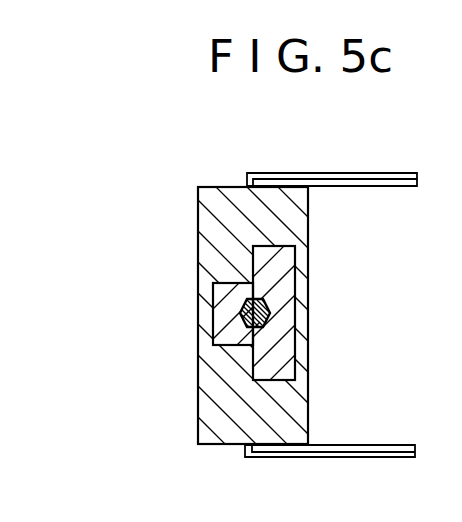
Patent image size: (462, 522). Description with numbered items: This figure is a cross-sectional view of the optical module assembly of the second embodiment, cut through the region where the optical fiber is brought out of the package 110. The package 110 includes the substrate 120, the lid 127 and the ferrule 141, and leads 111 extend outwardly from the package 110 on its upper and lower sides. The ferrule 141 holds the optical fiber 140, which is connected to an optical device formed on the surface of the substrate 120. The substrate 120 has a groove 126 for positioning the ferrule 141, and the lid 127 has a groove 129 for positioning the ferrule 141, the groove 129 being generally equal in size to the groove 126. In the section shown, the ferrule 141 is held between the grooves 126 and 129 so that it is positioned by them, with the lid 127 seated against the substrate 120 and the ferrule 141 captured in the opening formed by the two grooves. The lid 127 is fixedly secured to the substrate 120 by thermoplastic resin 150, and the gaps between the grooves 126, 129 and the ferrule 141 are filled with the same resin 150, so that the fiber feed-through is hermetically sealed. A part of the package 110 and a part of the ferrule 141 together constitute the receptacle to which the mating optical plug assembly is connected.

The package 110 is at (215, 188).
The leads 111 is at (320, 174).
The substrate 120 is at (284, 300).
The groove 126 is at (270, 337).
The lid 127 is at (222, 287).
The groove 129 is at (223, 312).
The optical fiber 140 is at (250, 326).
The ferrule 141 is at (250, 328).
The thermoplastic resin 150 is at (240, 313).